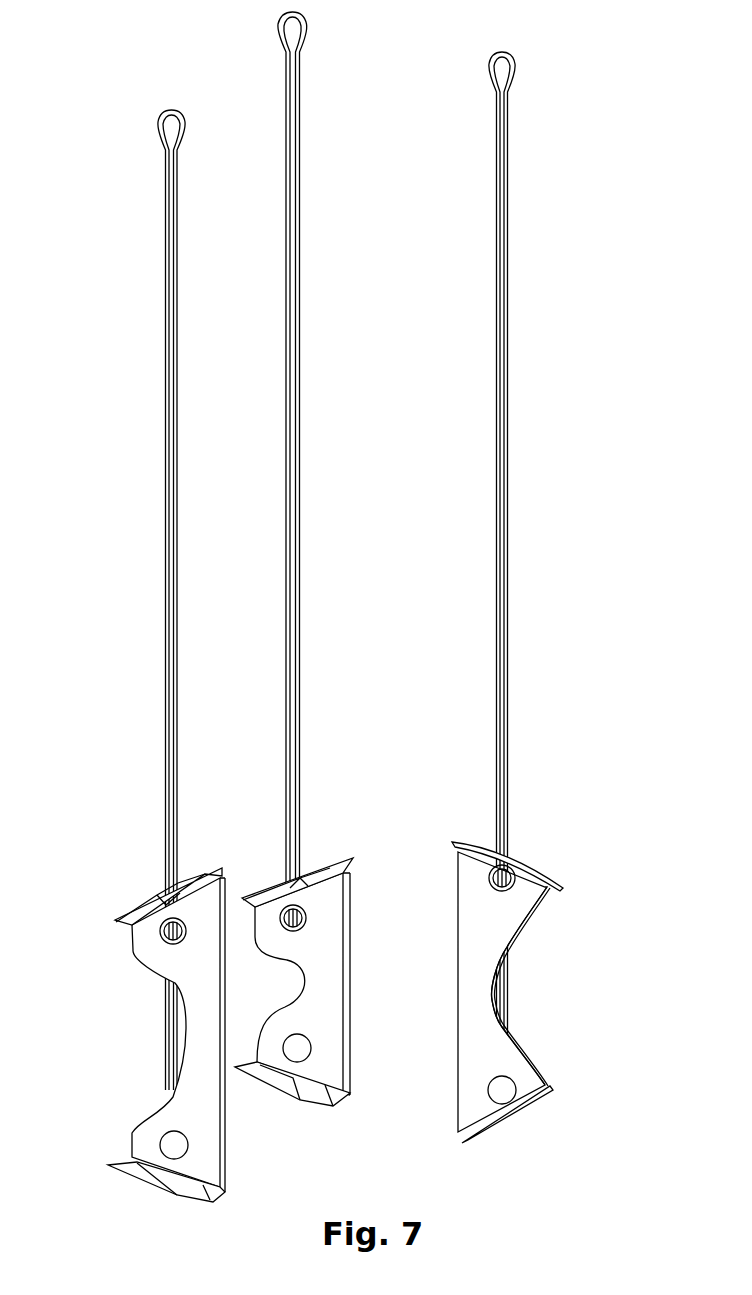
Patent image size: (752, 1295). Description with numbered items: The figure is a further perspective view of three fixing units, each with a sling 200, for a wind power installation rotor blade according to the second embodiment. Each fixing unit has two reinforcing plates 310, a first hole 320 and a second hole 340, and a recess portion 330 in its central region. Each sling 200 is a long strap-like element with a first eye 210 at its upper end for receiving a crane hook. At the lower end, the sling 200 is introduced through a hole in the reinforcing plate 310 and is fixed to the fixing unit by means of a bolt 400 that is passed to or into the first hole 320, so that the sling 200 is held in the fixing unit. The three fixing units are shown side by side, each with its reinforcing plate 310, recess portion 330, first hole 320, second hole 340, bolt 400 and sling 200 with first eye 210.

The sling 200 is at (505, 645).
The first eye 210 is at (158, 128).
The reinforcing plate 310 is at (160, 893).
The first opening 320 is at (188, 1137).
The recess portion 330 is at (492, 983).
The second opening 340 is at (487, 872).
The bolt 400 is at (170, 1143).